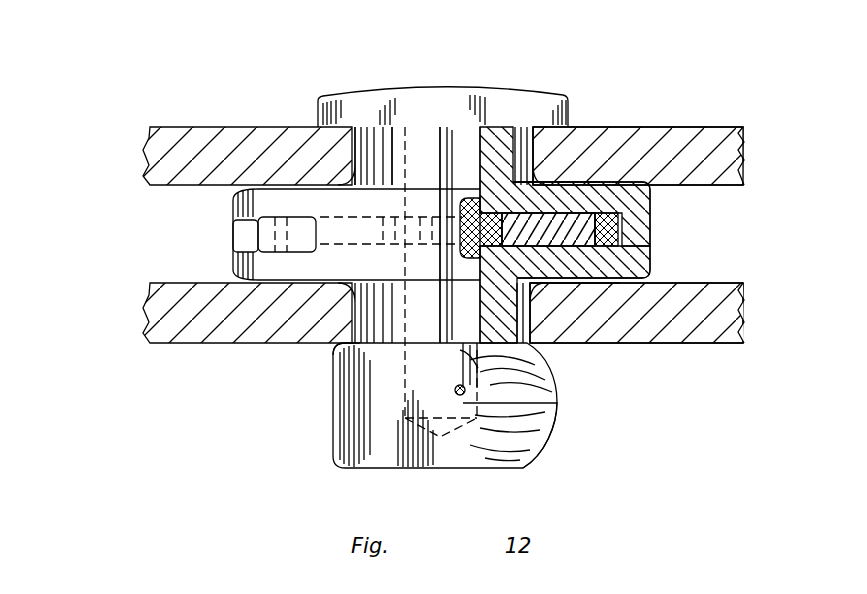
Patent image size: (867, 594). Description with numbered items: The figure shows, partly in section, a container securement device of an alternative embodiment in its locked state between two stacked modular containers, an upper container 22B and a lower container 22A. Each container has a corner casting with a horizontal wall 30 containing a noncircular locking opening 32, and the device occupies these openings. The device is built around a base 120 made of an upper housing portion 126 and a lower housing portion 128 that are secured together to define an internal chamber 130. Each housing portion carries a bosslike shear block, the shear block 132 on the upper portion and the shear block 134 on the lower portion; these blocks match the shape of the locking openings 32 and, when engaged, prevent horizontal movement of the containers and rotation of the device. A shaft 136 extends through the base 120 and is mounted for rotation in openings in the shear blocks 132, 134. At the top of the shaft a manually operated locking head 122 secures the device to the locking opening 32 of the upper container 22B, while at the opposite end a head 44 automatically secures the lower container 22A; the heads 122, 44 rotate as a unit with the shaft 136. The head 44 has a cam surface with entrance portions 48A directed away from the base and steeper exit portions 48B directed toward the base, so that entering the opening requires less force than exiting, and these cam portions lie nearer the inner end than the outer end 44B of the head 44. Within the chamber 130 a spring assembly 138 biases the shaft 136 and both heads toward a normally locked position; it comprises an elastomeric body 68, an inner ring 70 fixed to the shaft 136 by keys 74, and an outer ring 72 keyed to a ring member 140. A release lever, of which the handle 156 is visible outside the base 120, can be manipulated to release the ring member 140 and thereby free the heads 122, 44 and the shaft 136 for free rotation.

The container 22A is at (143, 318).
The container 22B is at (143, 160).
The horizontal wall 30 is at (172, 128).
The locking opening 32 is at (530, 150).
The head 44 is at (385, 428).
The outer end 44B is at (522, 470).
The entrance portion 48A is at (537, 440).
The exit portion 48B is at (556, 392).
The elastomeric body 68 is at (548, 246).
The inner ring 70 is at (478, 212).
The outer ring 72 is at (620, 288).
The keys 74 is at (420, 127).
The base 120 is at (632, 228).
The manually operated locking head 122 is at (522, 100).
The upper housing portion 126 is at (652, 200).
The lower housing portion 128 is at (652, 268).
The internal chamber 130 is at (592, 262).
The shear block 132 is at (387, 150).
The shear block 134 is at (348, 345).
The shaft 136 is at (460, 198).
The spring assembly 138 is at (590, 188).
The ring member 140 is at (620, 240).
The handle 156 is at (234, 235).